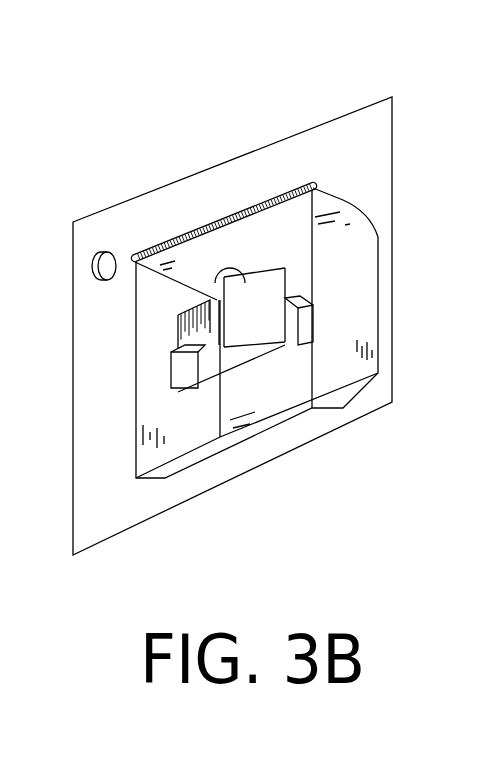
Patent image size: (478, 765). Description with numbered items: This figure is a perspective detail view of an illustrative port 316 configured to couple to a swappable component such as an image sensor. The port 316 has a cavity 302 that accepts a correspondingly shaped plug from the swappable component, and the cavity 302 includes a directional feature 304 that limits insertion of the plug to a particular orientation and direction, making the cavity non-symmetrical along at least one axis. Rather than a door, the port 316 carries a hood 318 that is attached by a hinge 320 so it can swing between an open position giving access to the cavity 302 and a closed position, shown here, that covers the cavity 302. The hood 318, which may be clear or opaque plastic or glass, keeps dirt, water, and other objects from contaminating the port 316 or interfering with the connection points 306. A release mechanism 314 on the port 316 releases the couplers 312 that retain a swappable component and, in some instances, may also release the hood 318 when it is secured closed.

The cavity 302 is at (272, 284).
The directional feature 304 is at (224, 277).
The connection points 306 is at (190, 327).
The coupler 312 is at (171, 368).
The release mechanism 314 is at (94, 272).
The port 316 is at (139, 153).
The hood 318 is at (353, 373).
The hinge 320 is at (230, 213).